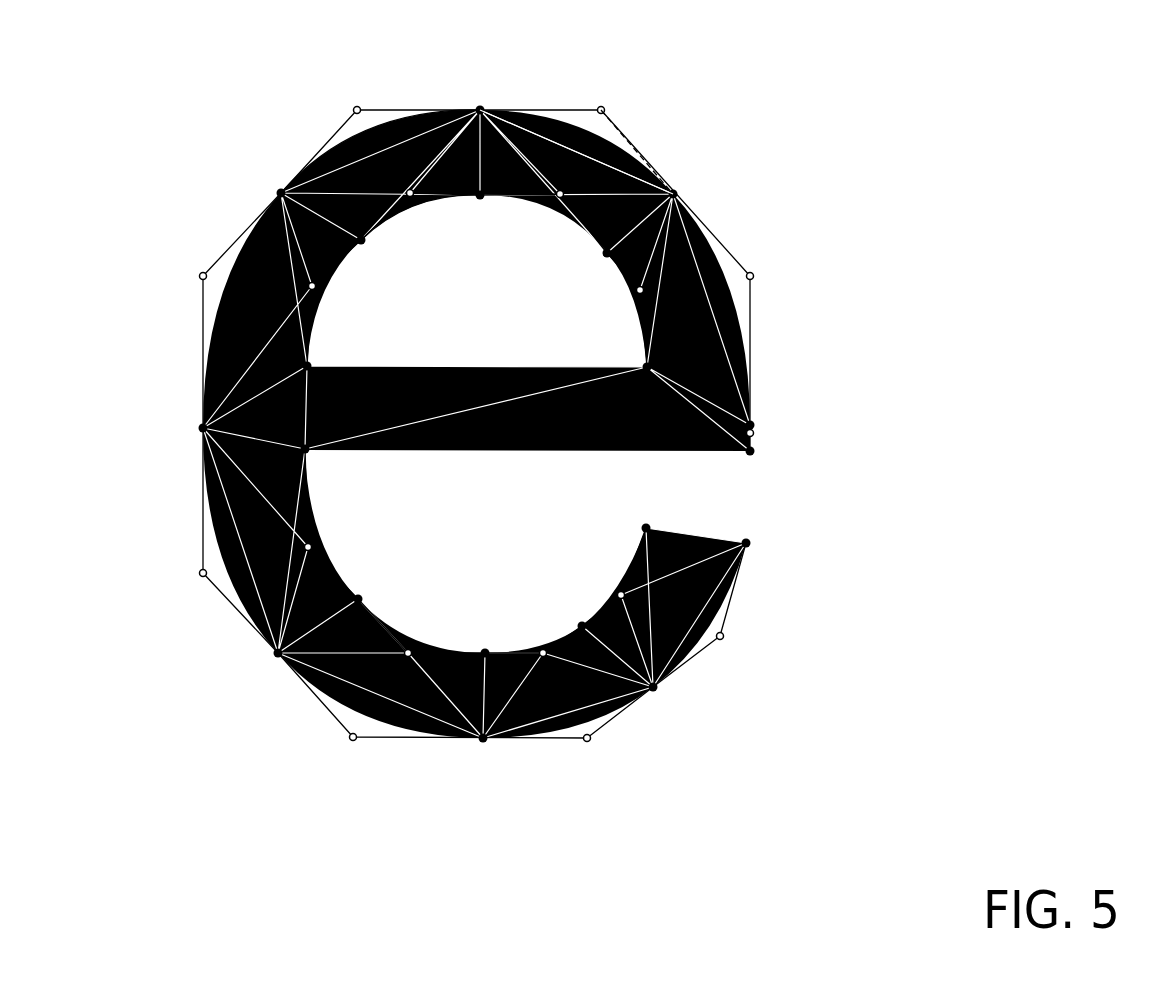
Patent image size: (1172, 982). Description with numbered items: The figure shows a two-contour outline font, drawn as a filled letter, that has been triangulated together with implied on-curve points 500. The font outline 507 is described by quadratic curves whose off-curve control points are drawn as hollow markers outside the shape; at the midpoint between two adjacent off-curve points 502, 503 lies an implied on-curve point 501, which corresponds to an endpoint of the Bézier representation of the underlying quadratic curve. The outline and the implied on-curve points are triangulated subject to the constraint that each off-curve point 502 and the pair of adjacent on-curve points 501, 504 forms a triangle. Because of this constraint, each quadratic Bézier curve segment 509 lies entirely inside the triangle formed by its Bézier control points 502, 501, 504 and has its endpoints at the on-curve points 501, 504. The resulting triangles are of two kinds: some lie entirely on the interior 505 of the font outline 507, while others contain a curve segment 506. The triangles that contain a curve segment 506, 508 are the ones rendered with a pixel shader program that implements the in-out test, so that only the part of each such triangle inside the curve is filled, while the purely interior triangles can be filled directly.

The implied on-curve point 500 is at (485, 742).
The implied on-curve point 501 is at (673, 194).
The off-curve point 502 is at (601, 110).
The off-curve point 503 is at (752, 278).
The on-curve point 504 is at (480, 110).
The interior 505 is at (581, 181).
The curve segment 506 is at (576, 152).
The font outline 507 is at (343, 128).
The curve segment 508 is at (417, 218).
The quadratic Bézier curve segment 509 is at (610, 142).